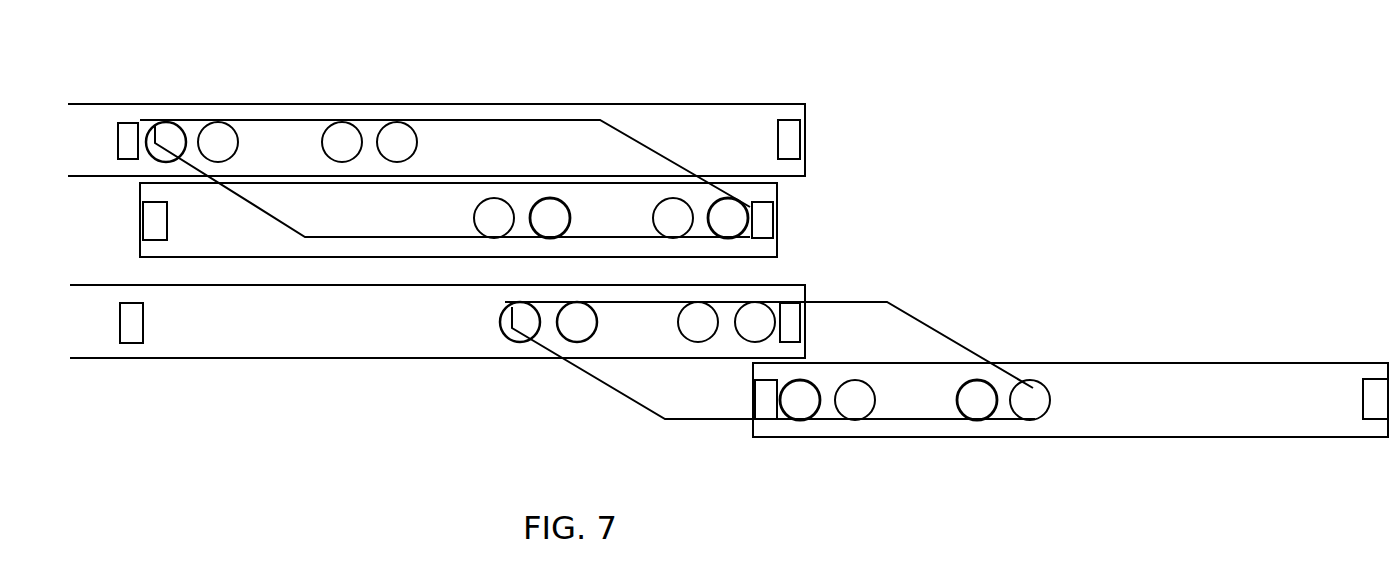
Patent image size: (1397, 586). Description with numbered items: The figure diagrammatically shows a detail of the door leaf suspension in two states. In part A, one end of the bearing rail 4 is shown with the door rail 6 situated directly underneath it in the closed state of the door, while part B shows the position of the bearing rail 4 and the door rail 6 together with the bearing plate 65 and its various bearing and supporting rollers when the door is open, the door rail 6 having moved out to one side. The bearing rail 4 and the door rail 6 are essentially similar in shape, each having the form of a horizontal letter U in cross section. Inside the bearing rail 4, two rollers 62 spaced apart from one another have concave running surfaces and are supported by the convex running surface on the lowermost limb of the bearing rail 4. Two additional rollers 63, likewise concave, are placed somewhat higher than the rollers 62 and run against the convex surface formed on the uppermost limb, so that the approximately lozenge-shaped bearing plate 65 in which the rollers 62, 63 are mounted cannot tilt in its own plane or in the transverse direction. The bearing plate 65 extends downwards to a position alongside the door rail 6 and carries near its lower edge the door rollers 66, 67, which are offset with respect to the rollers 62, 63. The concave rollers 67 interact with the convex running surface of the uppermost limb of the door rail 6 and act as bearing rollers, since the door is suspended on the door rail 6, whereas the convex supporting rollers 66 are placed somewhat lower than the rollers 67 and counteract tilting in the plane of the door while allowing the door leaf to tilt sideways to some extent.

The bearing rail 4 is at (680, 137).
The door rail 6 is at (207, 237).
The rollers 62 is at (218, 138).
The additional rollers 63 is at (165, 138).
The bearing plate 65 is at (502, 148).
The supporting rollers 66 is at (493, 217).
The bearing rollers 67 is at (552, 220).
The part A is at (127, 138).
The part B is at (127, 318).